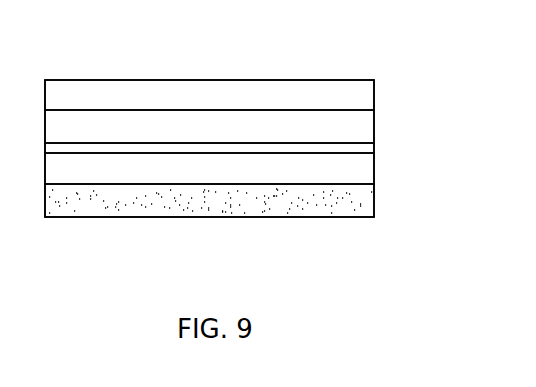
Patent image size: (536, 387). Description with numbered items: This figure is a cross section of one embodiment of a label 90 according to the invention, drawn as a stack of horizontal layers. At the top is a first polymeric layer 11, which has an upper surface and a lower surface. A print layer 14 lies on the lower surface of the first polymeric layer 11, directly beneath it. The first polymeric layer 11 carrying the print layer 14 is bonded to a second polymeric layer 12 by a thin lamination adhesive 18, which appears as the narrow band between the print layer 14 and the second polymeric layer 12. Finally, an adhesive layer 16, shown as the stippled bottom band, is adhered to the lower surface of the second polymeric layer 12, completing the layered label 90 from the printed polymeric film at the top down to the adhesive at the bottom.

The label 90 is at (100, 68).
The first polymeric layer 11 is at (353, 100).
The print layer 14 is at (360, 120).
The lamination adhesive 18 is at (345, 153).
The second polymeric layer 12 is at (365, 163).
The adhesive layer 16 is at (368, 205).